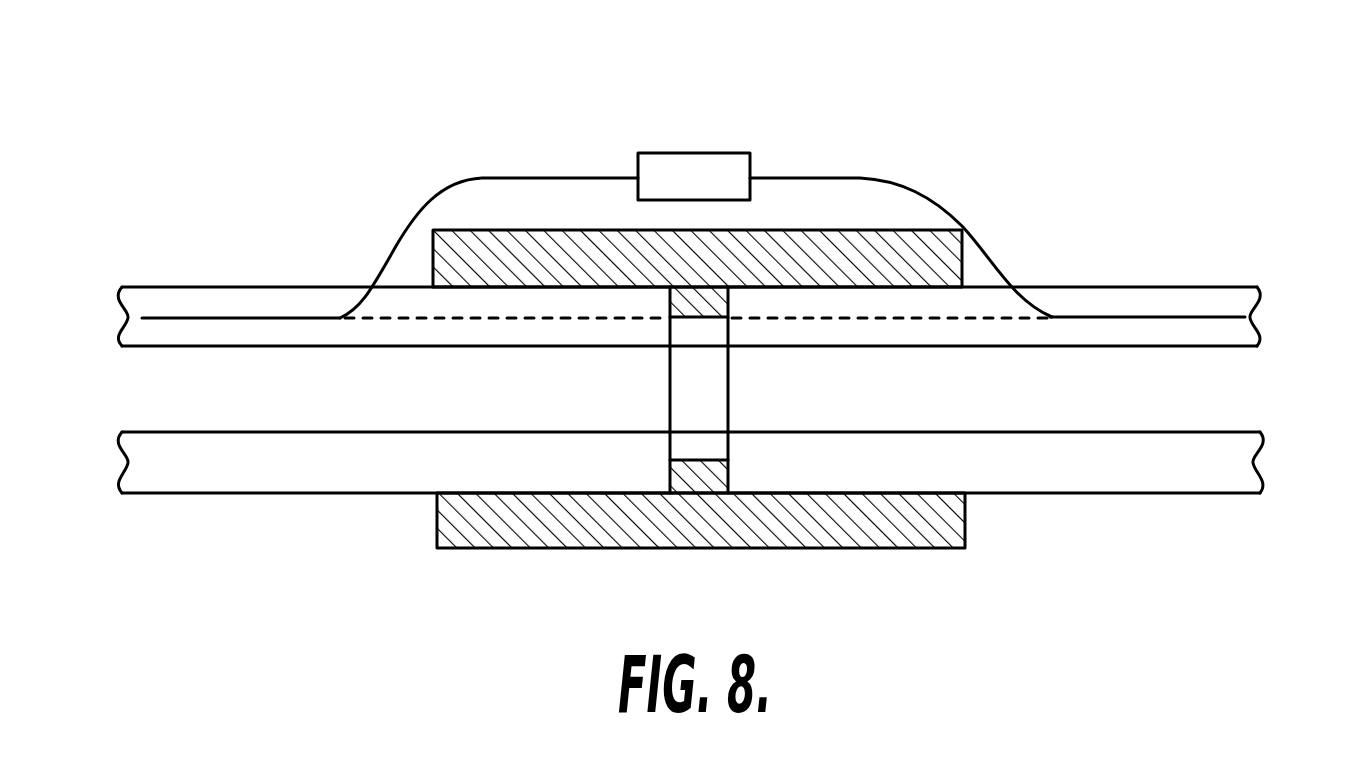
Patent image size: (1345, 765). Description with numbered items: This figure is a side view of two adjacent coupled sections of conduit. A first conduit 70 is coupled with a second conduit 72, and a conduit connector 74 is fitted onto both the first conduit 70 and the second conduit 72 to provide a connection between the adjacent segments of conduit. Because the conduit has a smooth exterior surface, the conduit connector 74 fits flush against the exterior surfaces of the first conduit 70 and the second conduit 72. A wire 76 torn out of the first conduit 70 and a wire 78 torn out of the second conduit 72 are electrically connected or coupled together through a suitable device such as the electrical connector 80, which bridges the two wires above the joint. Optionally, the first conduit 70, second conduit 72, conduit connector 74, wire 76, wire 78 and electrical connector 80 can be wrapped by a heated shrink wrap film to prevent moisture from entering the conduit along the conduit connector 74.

The first conduit 70 is at (220, 493).
The second conduit 72 is at (1232, 300).
The conduit connector 74 is at (960, 526).
The wire 76 is at (450, 188).
The wire 78 is at (972, 212).
The electrical connector 80 is at (683, 172).